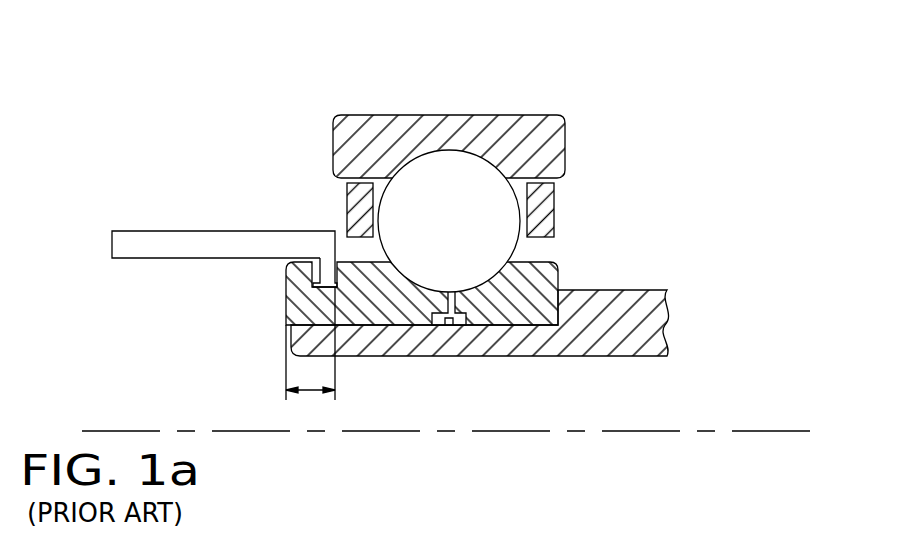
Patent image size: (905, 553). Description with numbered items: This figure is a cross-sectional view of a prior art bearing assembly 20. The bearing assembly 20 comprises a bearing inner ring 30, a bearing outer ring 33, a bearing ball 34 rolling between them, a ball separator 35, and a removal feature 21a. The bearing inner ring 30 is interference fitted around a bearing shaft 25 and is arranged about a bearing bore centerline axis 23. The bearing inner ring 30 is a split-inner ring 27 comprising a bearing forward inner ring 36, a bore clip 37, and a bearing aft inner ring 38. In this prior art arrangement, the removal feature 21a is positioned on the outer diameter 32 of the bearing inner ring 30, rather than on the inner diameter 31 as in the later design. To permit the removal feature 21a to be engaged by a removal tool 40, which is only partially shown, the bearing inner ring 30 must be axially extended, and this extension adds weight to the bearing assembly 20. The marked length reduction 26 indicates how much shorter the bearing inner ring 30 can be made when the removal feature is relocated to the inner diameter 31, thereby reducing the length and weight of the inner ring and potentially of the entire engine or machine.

The bearing assembly 20 is at (386, 216).
The removal feature 21a is at (321, 250).
The bearing bore centerline axis 23 is at (180, 430).
The bearing shaft 25 is at (655, 320).
The length reduction 26 is at (306, 393).
The split-inner ring 27 is at (525, 333).
The bearing inner ring 30 is at (490, 225).
The inner diameter 31 is at (509, 345).
The outer diameter 32 is at (440, 313).
The bearing outer ring 33 is at (520, 115).
The bearing ball 34 is at (435, 229).
The ball separator 35 is at (347, 208).
The bearing forward inner ring 36 is at (353, 313).
The bore clip 37 is at (452, 322).
The bearing aft inner ring 38 is at (497, 308).
The removal tool 40 is at (191, 233).